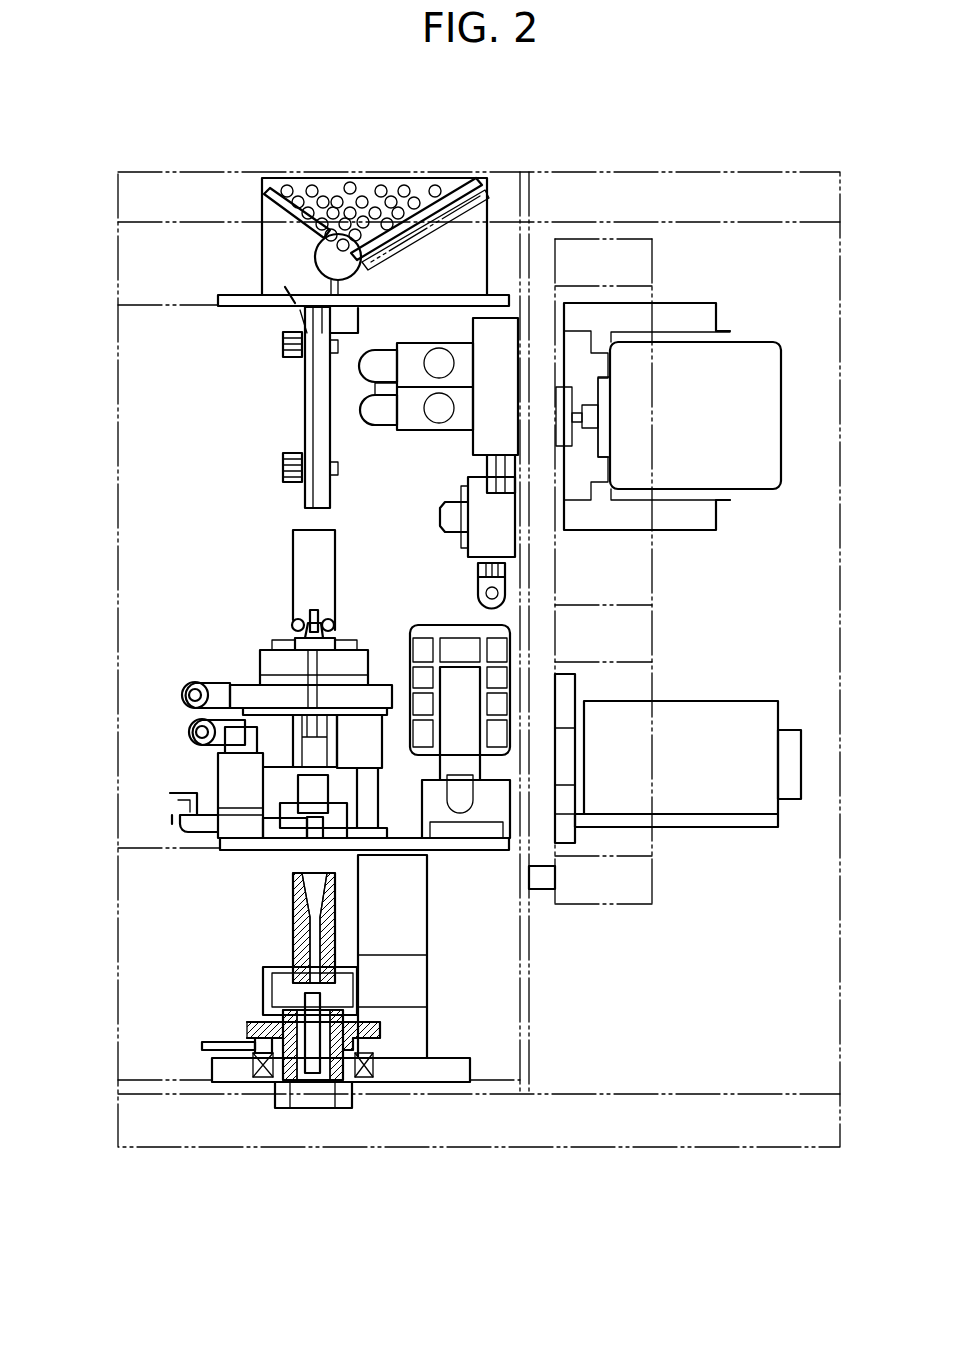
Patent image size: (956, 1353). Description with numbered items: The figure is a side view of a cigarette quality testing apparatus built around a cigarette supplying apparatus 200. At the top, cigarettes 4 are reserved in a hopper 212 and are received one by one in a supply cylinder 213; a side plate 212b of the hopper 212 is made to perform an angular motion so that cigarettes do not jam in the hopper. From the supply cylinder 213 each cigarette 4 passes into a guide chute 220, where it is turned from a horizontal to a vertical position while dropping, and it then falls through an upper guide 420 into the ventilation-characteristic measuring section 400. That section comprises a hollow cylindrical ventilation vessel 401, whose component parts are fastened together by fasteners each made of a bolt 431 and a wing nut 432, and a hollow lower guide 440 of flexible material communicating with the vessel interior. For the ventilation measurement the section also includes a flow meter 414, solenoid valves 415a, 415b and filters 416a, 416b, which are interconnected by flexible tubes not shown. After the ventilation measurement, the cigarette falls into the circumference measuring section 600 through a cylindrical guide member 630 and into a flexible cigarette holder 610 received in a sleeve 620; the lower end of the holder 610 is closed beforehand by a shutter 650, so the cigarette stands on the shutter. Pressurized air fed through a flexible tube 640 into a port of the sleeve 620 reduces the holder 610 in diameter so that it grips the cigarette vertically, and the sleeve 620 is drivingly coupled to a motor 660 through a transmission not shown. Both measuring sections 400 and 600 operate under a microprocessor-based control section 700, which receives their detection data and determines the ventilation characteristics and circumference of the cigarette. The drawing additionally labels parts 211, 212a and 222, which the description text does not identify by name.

The cigarette supplying apparatus 200 is at (205, 270).
The hopper 211 is at (262, 200).
The hopper 212 is at (323, 185).
The first chute plate 212a is at (282, 187).
The side plate 212b is at (385, 243).
The supply cylinder 213 is at (325, 258).
The cigarette 4 is at (436, 190).
The guide chute 220 is at (305, 404).
The guide bracket 222 is at (283, 470).
The ventilation-characteristic measuring section 400 is at (190, 668).
The ventilation vessel 401 is at (268, 658).
The flow meter 414 is at (455, 675).
The solenoid valve 415a is at (405, 355).
The solenoid valve 415b is at (408, 430).
The filter 416a is at (448, 630).
The filter 416b is at (478, 515).
The upper guide 420 is at (300, 530).
The bolt 431 is at (308, 614).
The wing nut 432 is at (295, 622).
The lower guide 440 is at (312, 787).
The circumference measuring section 600 is at (175, 915).
The cigarette holder 610 is at (283, 1005).
The sleeve 620 is at (253, 1032).
The guide member 630 is at (293, 908).
The flexible tube 640 is at (205, 1045).
The shutter 650 is at (300, 1110).
The motor 660 is at (408, 893).
The control section 700 is at (762, 330).